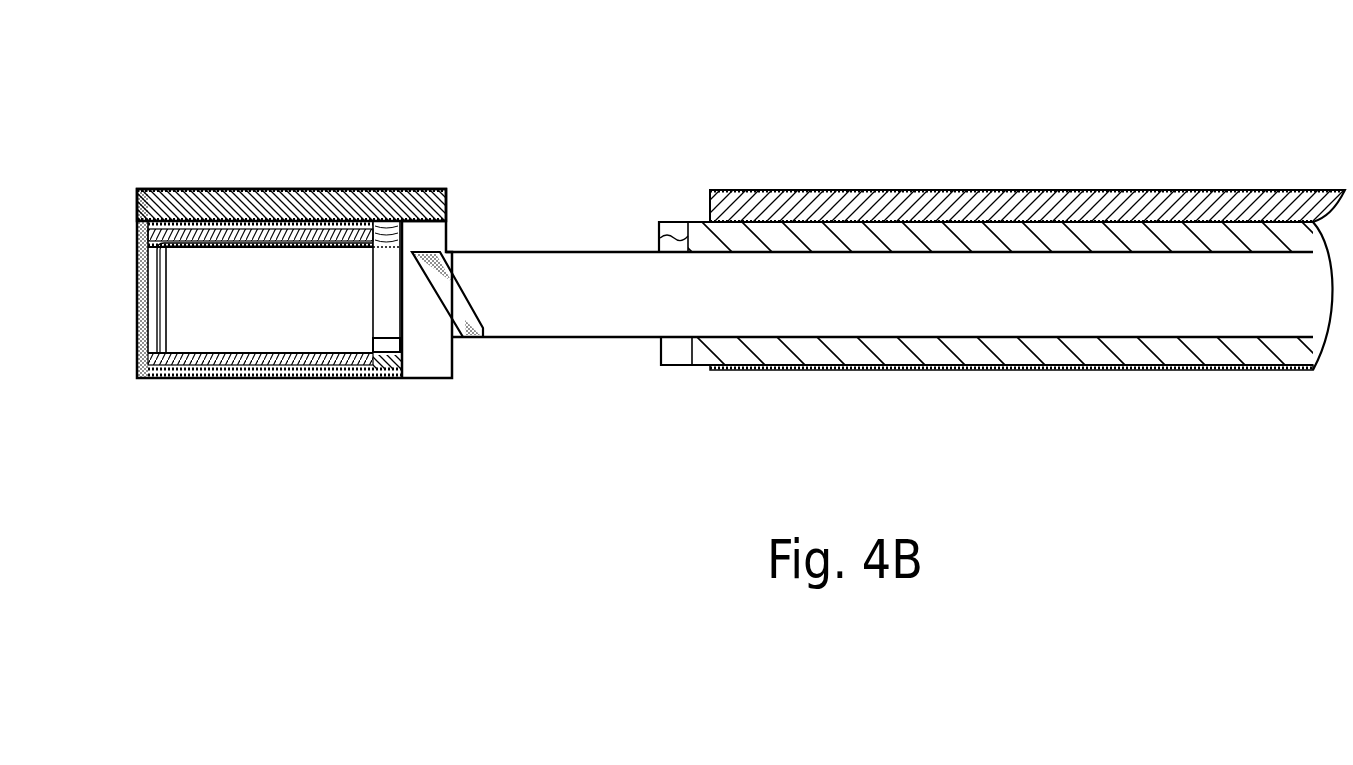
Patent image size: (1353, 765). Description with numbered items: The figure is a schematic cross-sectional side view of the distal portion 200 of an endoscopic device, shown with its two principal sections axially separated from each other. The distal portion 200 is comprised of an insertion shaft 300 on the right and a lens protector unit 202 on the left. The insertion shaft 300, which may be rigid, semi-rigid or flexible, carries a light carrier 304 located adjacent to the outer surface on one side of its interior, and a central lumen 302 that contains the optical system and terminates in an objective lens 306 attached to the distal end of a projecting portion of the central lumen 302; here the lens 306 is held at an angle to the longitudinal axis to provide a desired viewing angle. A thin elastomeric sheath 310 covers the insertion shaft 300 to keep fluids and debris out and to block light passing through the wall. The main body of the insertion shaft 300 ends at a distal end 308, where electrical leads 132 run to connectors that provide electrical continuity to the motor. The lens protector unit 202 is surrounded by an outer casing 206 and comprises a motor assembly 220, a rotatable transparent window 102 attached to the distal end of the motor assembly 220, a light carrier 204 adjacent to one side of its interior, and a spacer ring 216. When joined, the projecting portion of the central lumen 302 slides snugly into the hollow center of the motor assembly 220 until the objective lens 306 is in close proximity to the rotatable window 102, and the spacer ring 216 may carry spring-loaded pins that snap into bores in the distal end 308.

The rotatable transparent window 102 is at (147, 308).
The electrical leads 132 is at (667, 230).
The distal portion 200 is at (895, 270).
The lens protector unit 202 is at (294, 260).
The light carrier 204 is at (368, 210).
The outer casing 206 is at (222, 190).
The spacer ring 216 is at (388, 347).
The motor assembly 220 is at (254, 260).
The insertion shaft 300 is at (1027, 262).
The central lumen 302 is at (912, 315).
The light carrier 304 is at (797, 210).
The objective lens 306 is at (458, 300).
The distal end 308 is at (972, 316).
The elastomeric sheath 310 is at (773, 368).